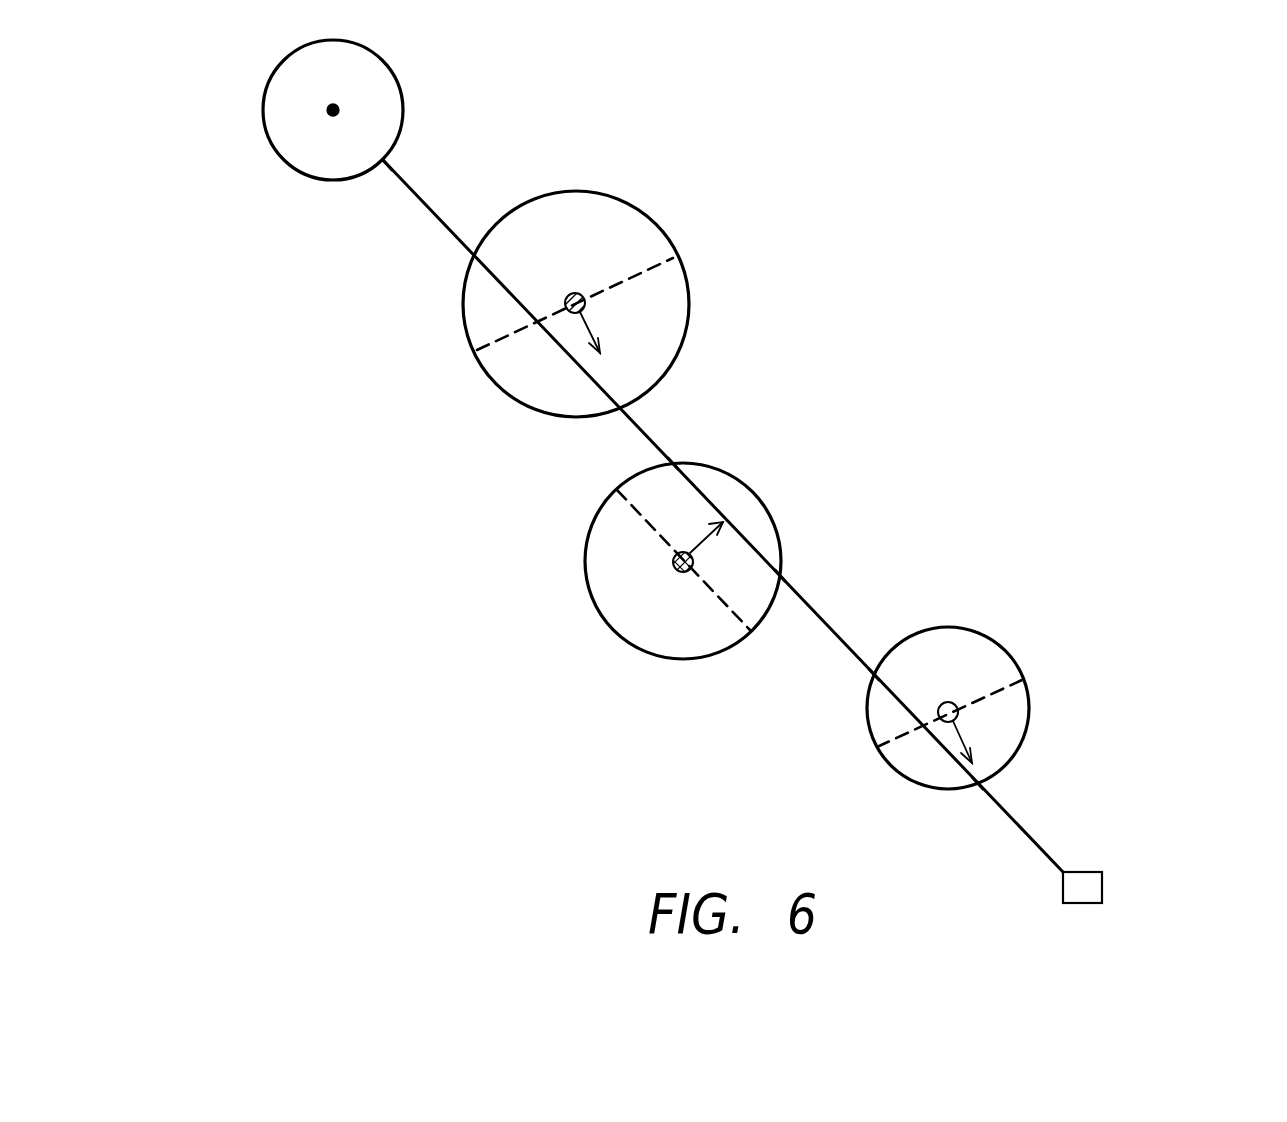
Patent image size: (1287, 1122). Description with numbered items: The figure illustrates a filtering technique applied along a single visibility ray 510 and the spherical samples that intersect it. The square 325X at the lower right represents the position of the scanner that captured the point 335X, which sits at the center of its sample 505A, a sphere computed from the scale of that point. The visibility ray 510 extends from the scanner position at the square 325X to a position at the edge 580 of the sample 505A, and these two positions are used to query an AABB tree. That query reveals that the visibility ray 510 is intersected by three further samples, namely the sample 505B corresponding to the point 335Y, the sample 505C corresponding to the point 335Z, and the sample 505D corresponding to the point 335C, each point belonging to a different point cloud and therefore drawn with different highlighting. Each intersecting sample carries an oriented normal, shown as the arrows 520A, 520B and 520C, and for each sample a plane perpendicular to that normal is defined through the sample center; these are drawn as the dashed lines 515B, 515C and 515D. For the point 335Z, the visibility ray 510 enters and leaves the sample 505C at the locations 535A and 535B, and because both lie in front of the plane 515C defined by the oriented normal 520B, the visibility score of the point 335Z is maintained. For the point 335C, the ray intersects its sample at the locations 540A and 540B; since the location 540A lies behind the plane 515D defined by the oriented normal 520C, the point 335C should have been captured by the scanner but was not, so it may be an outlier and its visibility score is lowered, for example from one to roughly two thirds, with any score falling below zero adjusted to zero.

The point 335X is at (338, 106).
The sample 505A is at (290, 167).
The edge 580 is at (380, 163).
The visibility ray 510 is at (427, 202).
The plane 515B is at (510, 333).
The point 335Y is at (585, 296).
The oriented normal 520A is at (590, 327).
The sample 505B is at (477, 357).
The location 535A is at (672, 462).
The location 535B is at (781, 575).
The oriented normal 520B is at (697, 540).
The plane 515C is at (647, 523).
The sample 505C is at (603, 620).
The point 335Z is at (681, 570).
The location 540A is at (874, 673).
The point 335C is at (957, 701).
The sample 505D is at (867, 712).
The oriented normal 520C is at (962, 735).
The location 540B is at (978, 783).
The plane 515D is at (908, 732).
The square 325X is at (1102, 872).